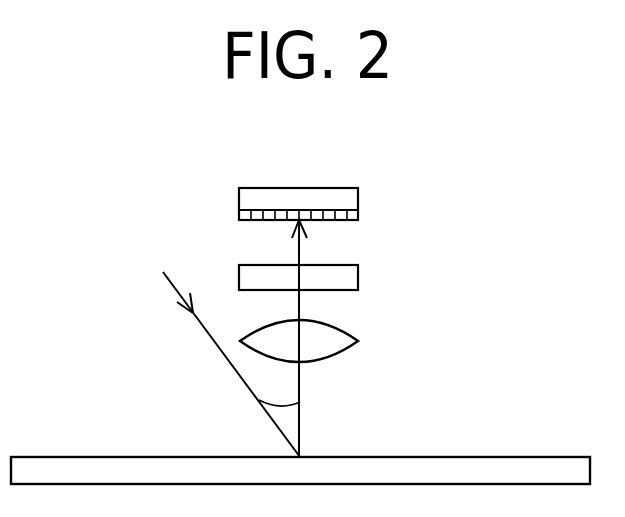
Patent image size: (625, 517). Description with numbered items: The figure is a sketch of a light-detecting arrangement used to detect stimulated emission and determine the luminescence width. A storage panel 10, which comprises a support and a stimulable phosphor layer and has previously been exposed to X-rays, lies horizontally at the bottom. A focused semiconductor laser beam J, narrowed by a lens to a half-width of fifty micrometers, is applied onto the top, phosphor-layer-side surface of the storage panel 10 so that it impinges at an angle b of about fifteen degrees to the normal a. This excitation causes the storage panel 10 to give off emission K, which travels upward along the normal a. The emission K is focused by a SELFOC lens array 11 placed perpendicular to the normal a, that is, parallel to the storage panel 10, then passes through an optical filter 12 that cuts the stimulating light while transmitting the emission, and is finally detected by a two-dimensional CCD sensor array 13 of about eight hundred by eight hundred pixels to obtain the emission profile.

The storage panel 10 is at (496, 457).
The SELFOC lens array 11 is at (338, 326).
The optical filter 12 is at (358, 275).
The two-dimensional CCD sensor array 13 is at (358, 193).
The focused beam J is at (238, 373).
The emission K is at (299, 247).
The normal a is at (303, 384).
The angle b is at (260, 399).